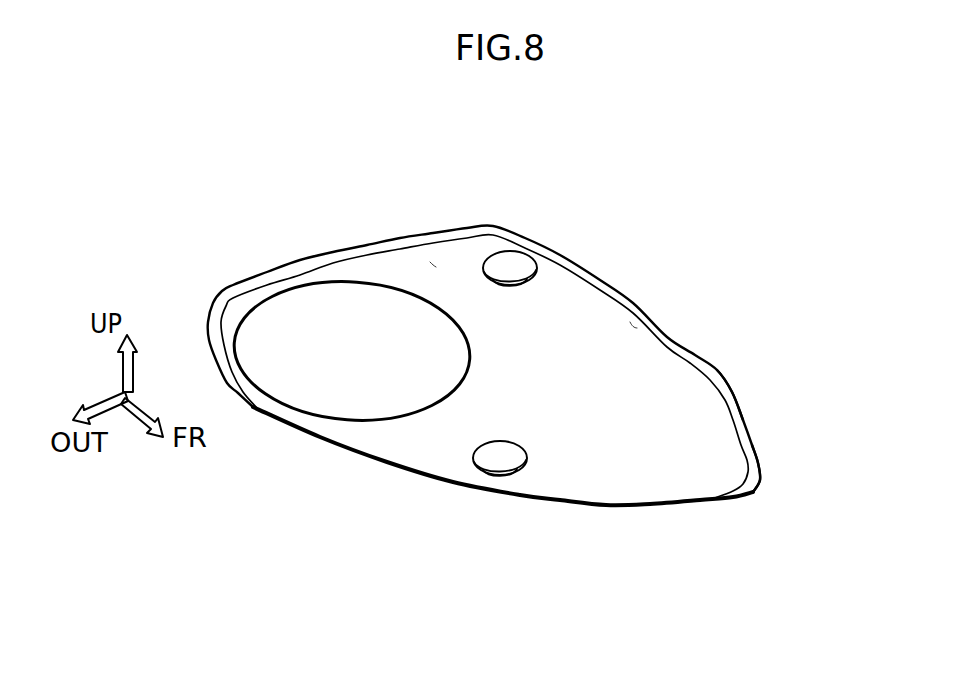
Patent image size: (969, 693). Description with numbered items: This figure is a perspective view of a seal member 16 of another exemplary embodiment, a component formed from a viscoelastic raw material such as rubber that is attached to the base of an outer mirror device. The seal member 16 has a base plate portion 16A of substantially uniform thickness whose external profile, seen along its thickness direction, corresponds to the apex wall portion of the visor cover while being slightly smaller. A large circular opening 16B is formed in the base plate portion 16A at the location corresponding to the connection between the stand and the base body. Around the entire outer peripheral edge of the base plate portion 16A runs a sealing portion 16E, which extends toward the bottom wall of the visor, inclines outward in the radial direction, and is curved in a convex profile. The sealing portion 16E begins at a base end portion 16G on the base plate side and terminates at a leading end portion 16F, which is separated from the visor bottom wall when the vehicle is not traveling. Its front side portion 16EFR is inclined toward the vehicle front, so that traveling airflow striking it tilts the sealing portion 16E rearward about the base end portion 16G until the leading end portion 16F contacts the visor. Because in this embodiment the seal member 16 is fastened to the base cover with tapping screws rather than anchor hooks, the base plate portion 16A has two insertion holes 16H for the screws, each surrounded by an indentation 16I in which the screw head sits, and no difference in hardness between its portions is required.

The seal member 16 is at (641, 235).
The base plate portion 16A is at (436, 267).
The circular opening 16B is at (363, 292).
The sealing portion 16E is at (733, 381).
The front side portion of the sealing portion 16EFR is at (760, 488).
The leading end portion 16F is at (594, 265).
The base end portion 16G is at (637, 308).
The insertion hole 16H is at (505, 258).
The indentation 16I is at (512, 282).